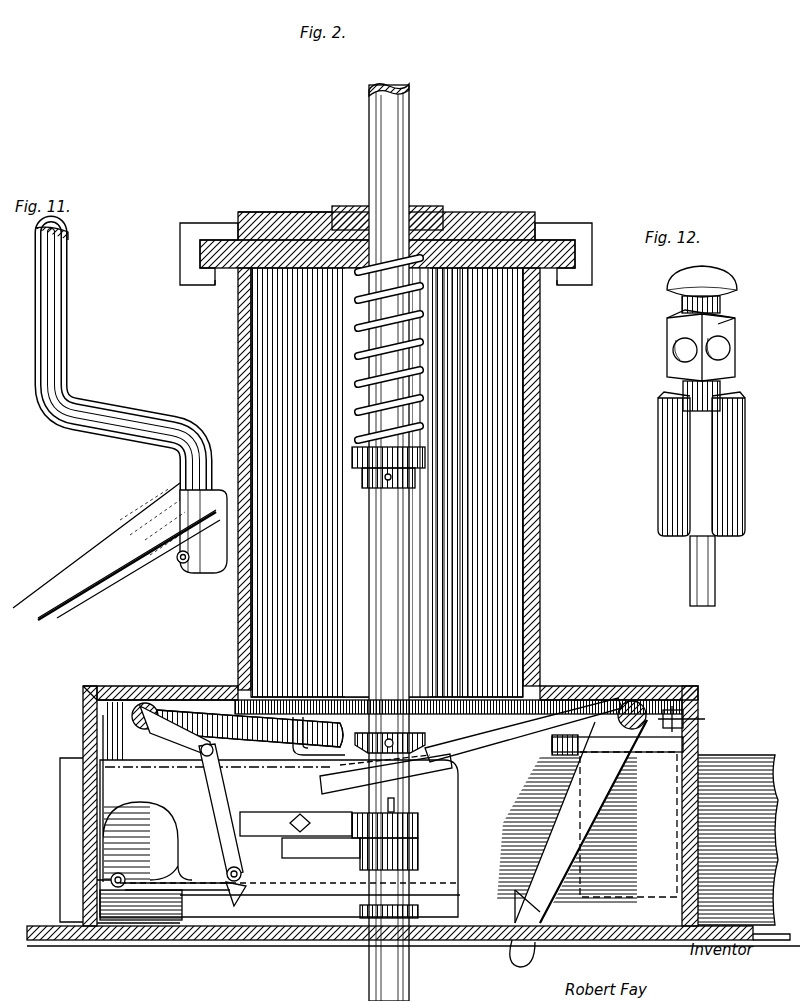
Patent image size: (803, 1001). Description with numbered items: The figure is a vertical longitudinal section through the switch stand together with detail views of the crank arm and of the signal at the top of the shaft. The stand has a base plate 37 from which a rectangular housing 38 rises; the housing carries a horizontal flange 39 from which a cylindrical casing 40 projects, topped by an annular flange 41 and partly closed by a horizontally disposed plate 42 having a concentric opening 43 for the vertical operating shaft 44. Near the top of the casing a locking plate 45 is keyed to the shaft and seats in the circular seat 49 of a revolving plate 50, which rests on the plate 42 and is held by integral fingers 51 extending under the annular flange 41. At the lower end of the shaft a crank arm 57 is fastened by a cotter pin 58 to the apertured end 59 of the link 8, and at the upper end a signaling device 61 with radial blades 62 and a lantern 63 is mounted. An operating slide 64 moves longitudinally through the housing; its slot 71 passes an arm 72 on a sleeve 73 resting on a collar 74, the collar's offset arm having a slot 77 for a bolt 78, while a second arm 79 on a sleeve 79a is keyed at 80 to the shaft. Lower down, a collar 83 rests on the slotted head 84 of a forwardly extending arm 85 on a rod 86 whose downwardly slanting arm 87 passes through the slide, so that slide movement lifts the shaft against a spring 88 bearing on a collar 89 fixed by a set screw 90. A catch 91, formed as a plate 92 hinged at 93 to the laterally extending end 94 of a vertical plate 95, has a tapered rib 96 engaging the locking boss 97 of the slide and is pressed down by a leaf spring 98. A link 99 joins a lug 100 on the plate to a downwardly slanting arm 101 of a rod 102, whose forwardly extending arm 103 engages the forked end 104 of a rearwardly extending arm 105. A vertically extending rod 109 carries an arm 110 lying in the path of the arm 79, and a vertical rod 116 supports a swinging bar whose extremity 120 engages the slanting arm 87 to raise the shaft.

In FIG. 11, the link 8 is at (54, 583).
In FIG. 2, the base plate 37 is at (158, 942).
In FIG. 2, the rectangular housing 38 is at (82, 718).
In FIG. 2, the horizontal flange 39 is at (566, 690).
In FIG. 2, the cylindrical casing 40 is at (541, 436).
In FIG. 2, the annular flange 41 is at (557, 288).
In FIG. 2, the horizontally disposed plate 42 is at (472, 244).
In FIG. 2, the concentric opening 43 is at (470, 216).
In FIG. 2, the operating shaft 44 is at (412, 135).
In FIG. 12, the operating shaft 44 is at (716, 548).
In FIG. 2, the locking plate 45 is at (412, 204).
In FIG. 2, the circular seat 49 is at (332, 216).
In FIG. 2, the revolving plate 50 is at (540, 224).
In FIG. 2, the fingers 51 is at (595, 240).
In FIG. 11, the crank arm 57 is at (100, 412).
In FIG. 11, the cotter pin 58 is at (178, 562).
In FIG. 11, the apertured end 59 is at (203, 520).
In FIG. 12, the signaling device 61 is at (680, 400).
In FIG. 12, the blades 62 is at (728, 440).
In FIG. 12, the lantern 63 is at (668, 332).
In FIG. 2, the operating slide 64 is at (733, 762).
In FIG. 2, the slot 71 is at (462, 810).
In FIG. 2, the arm 72 is at (420, 850).
In FIG. 2, the sleeve 73 is at (372, 852).
In FIG. 2, the collar 74 is at (360, 870).
In FIG. 2, the slot 77 is at (321, 848).
In FIG. 2, the bolt 78 is at (290, 823).
In FIG. 2, the arm 79 is at (296, 824).
In FIG. 2, the sleeve 79a is at (420, 826).
In FIG. 2, the key 80 is at (398, 806).
In FIG. 2, the collar 83 is at (398, 735).
In FIG. 2, the slotted head 84 is at (450, 745).
In FIG. 2, the forwardly extending arm 85 is at (588, 720).
In FIG. 2, the rod 86 is at (664, 716).
In FIG. 2, the downwardly slanting arm 87 is at (612, 800).
In FIG. 2, the spring 88 is at (425, 372).
In FIG. 2, the collar 89 is at (426, 460).
In FIG. 2, the set screw 90 is at (392, 478).
In FIG. 2, the catch 91 is at (200, 892).
In FIG. 2, the plate 92 is at (162, 880).
In FIG. 2, the hinge 93 is at (118, 888).
In FIG. 2, the laterally extending end 94 is at (92, 905).
In FIG. 2, the vertical plate 95 is at (62, 845).
In FIG. 2, the tapered rib 96 is at (236, 906).
In FIG. 2, the locking boss 97 is at (512, 932).
In FIG. 2, the leaf spring 98 is at (118, 808).
In FIG. 2, the link 99 is at (218, 800).
In FIG. 2, the lug 100 is at (243, 875).
In FIG. 2, the downwardly slanting arm 101 is at (176, 745).
In FIG. 2, the rod 102 is at (146, 703).
In FIG. 2, the forwardly extending arm 103 is at (200, 720).
In FIG. 2, the forked end 104 is at (333, 748).
In FIG. 2, the rearwardly extending arm 105 is at (338, 772).
In FIG. 2, the vertically extending rod 109 is at (92, 702).
In FIG. 2, the arm 110 is at (262, 765).
In FIG. 2, the vertical rod 116 is at (585, 790).
In FIG. 2, the extremity 120 is at (555, 748).